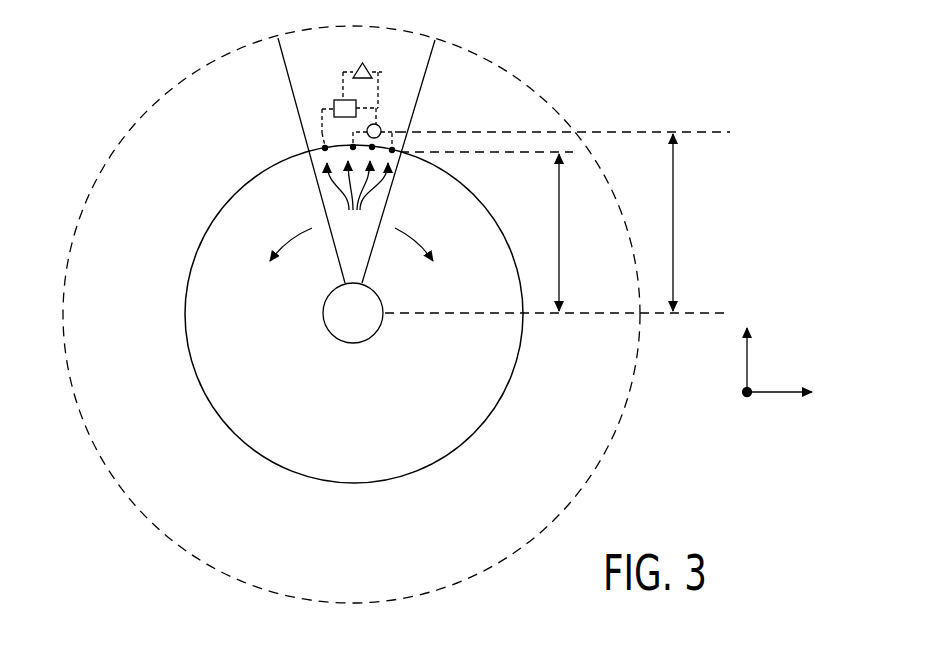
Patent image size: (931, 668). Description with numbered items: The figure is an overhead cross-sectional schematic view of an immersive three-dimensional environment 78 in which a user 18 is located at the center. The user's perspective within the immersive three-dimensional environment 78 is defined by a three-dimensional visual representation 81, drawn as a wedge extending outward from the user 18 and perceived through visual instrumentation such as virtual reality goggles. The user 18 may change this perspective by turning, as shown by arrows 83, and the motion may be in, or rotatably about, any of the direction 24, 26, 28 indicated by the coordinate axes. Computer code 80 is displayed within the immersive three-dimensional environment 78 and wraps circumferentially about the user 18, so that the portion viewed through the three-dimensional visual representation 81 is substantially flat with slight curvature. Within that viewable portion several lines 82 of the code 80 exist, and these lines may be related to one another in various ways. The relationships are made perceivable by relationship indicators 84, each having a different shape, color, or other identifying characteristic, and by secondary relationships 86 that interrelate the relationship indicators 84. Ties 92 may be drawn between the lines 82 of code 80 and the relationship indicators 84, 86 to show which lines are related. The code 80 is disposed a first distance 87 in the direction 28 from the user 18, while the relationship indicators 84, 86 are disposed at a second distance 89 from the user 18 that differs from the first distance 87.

The immersive 3-D environment 78 is at (146, 108).
The computer code 80 is at (452, 448).
The user 18 is at (352, 343).
The 3-D visual representation 81 is at (422, 85).
The secondary relationships 86 is at (352, 60).
The relationship indicators 84 is at (330, 100).
The ties 92 is at (318, 122).
The lines of code 82 is at (357, 202).
The arrows 83 is at (292, 236).
The first distance 87 is at (557, 222).
The second distance 89 is at (673, 222).
The direction 24 is at (746, 362).
The direction 26 is at (775, 395).
The direction 28 is at (745, 396).